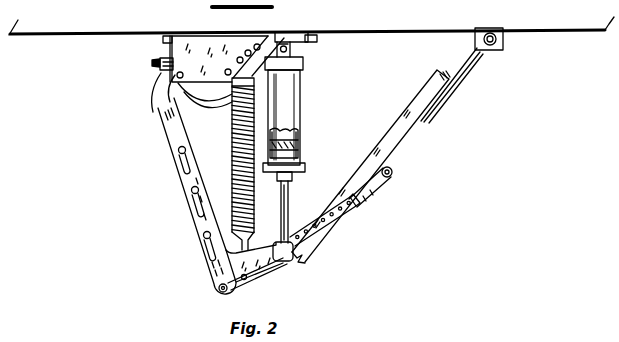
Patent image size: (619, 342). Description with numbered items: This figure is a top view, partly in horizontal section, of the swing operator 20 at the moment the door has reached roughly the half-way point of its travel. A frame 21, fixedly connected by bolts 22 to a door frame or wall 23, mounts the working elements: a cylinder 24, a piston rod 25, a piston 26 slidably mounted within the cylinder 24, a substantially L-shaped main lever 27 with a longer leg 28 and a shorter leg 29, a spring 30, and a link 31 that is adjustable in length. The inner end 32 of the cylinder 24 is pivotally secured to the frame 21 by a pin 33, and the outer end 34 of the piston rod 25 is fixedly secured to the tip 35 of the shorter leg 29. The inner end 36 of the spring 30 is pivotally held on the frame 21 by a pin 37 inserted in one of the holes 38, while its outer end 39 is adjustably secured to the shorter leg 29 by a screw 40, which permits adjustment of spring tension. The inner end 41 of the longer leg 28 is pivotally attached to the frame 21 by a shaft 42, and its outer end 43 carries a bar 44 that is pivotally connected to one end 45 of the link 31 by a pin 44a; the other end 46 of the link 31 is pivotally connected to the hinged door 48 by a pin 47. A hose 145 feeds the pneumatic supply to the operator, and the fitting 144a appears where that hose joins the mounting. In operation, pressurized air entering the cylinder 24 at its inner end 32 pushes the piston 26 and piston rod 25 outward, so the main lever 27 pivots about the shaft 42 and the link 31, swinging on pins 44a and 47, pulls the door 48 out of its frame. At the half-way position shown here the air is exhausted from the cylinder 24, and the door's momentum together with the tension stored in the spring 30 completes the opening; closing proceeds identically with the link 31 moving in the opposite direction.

The swing operator 20 is at (171, 156).
The frame 21 is at (172, 52).
The bolts 22 is at (163, 40).
The door frame or wall 23 is at (41, 36).
The cylinder 24 is at (302, 100).
The piston rod 25 is at (290, 188).
The piston 26 is at (300, 137).
The main lever 27 is at (201, 245).
The longer leg 28 is at (187, 201).
The shorter leg 29 is at (283, 272).
The spring 30 is at (232, 143).
The link 31 is at (330, 212).
The inner end of cylinder 32 is at (302, 58).
The pin 33 is at (294, 35).
The outer end of piston rod 34 is at (287, 213).
The tip of shorter leg 35 is at (294, 267).
The inner end of spring 36 is at (268, 37).
The pin 37 is at (240, 57).
The holes 38 is at (226, 70).
The outer end of spring 39 is at (231, 229).
The screw 40 is at (254, 277).
The inner end of longer leg 41 is at (159, 104).
The shaft 42 is at (178, 34).
The outer end of longer leg 43 is at (213, 272).
The bar 44 is at (218, 287).
The pin 44a is at (221, 292).
The end of link 45 is at (242, 284).
The other end of link 46 is at (373, 183).
The pin 47 is at (393, 175).
The hinged door 48 is at (402, 115).
The fitting 144a is at (160, 69).
The hose 145 is at (186, 106).